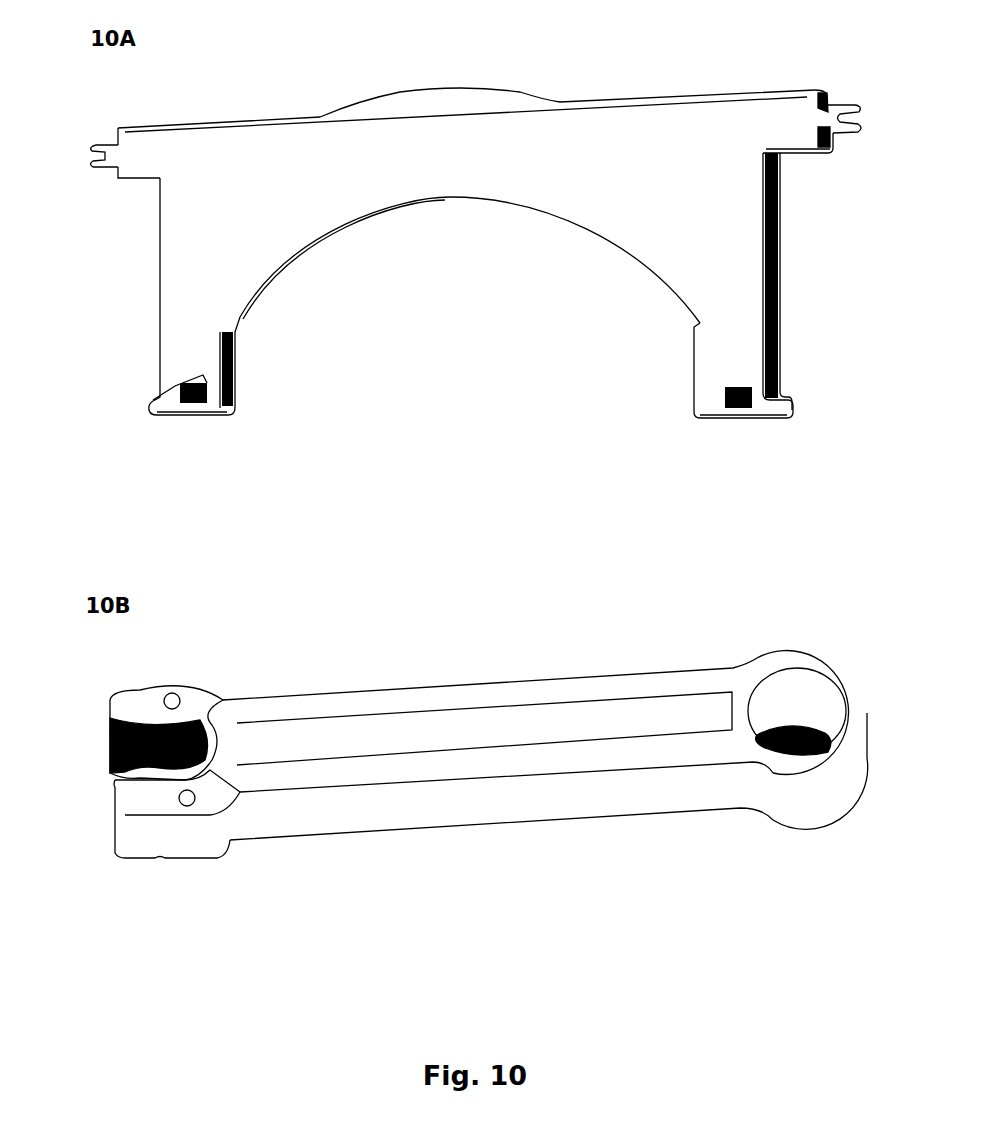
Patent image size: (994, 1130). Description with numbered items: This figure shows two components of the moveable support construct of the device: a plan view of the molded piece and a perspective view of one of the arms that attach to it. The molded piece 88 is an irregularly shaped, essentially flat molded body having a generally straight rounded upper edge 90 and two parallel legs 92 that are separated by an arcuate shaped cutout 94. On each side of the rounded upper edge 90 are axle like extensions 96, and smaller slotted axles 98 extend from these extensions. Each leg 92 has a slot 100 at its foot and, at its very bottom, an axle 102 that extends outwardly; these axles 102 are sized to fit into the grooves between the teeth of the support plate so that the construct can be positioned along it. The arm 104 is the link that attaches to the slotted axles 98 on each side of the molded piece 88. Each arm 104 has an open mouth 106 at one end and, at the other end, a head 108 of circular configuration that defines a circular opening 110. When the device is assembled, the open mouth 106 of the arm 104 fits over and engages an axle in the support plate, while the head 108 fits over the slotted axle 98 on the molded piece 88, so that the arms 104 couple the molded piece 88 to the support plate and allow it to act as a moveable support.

In FIG. 10A, the molded piece 88 is at (780, 232).
In FIG. 10A, the rounded upper edge 90 is at (693, 98).
In FIG. 10A, the legs 92 is at (162, 365).
In FIG. 10A, the arcuate shaped cutout 94 is at (437, 205).
In FIG. 10A, the axle like extensions 96 is at (175, 130).
In FIG. 10A, the slotted axles 98 is at (90, 148).
In FIG. 10A, the slot 100 is at (197, 375).
In FIG. 10A, the axle 102 is at (208, 417).
In FIG. 10B, the arm 104 is at (510, 676).
In FIG. 10B, the open mouth 106 is at (127, 773).
In FIG. 10B, the head 108 is at (775, 653).
In FIG. 10B, the circular opening 110 is at (852, 708).